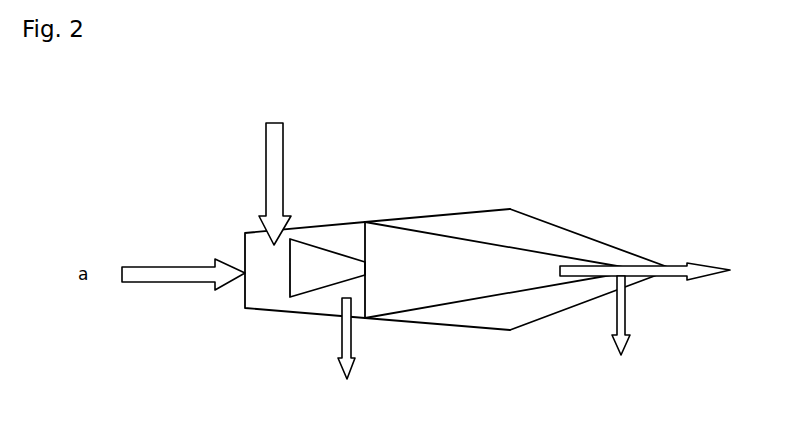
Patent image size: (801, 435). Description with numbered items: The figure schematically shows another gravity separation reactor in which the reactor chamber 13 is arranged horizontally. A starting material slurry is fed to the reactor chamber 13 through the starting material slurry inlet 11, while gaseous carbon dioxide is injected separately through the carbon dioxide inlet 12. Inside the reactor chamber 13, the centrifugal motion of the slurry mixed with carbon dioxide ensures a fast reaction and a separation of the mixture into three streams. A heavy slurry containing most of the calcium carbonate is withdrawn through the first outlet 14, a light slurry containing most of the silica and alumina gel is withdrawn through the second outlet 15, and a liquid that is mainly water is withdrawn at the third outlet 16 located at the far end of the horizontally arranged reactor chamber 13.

The starting material slurry inlet 11 is at (245, 274).
The carbon dioxide inlet 12 is at (267, 228).
The reactor chamber 13 is at (525, 209).
The first outlet 14 is at (353, 343).
The second outlet 15 is at (628, 317).
The third outlet 16 is at (675, 263).